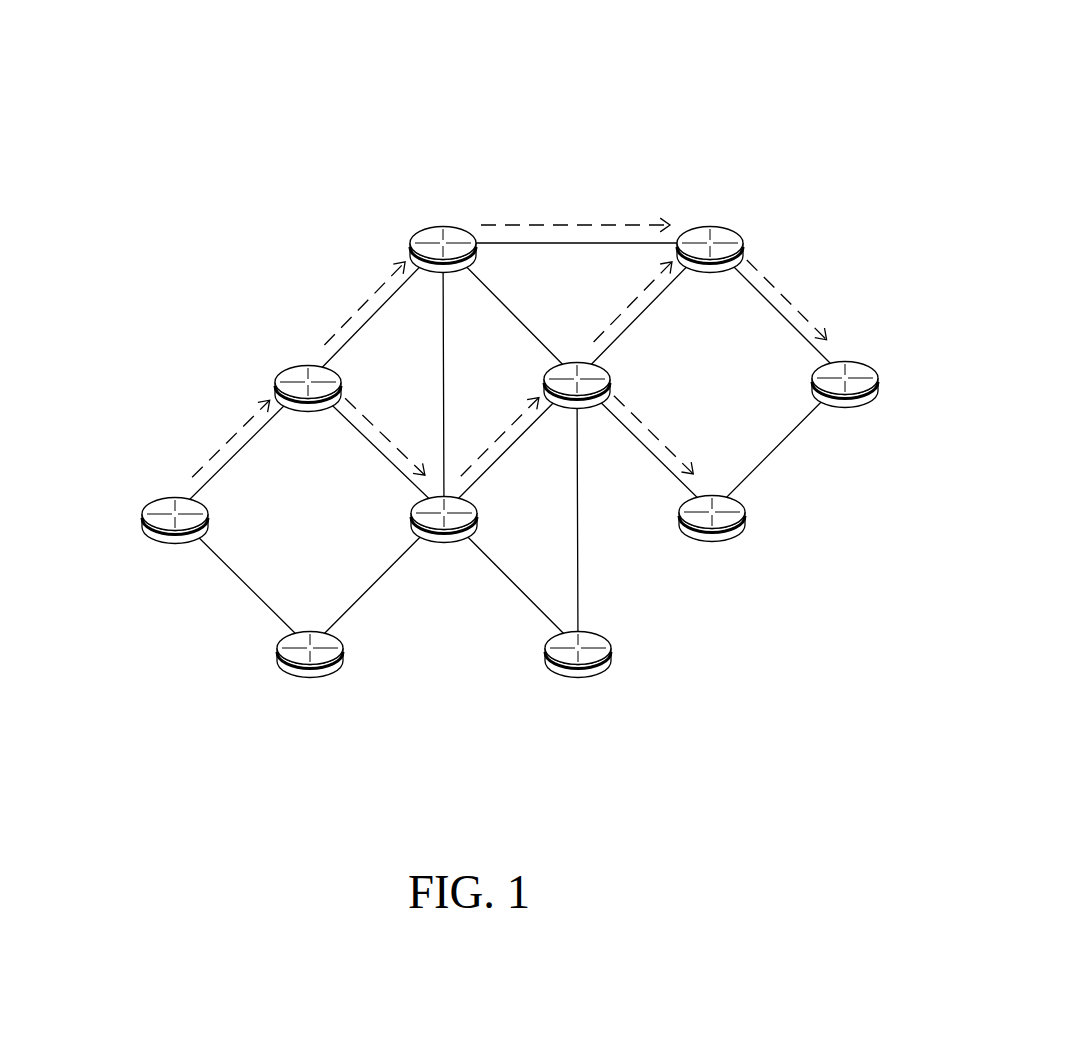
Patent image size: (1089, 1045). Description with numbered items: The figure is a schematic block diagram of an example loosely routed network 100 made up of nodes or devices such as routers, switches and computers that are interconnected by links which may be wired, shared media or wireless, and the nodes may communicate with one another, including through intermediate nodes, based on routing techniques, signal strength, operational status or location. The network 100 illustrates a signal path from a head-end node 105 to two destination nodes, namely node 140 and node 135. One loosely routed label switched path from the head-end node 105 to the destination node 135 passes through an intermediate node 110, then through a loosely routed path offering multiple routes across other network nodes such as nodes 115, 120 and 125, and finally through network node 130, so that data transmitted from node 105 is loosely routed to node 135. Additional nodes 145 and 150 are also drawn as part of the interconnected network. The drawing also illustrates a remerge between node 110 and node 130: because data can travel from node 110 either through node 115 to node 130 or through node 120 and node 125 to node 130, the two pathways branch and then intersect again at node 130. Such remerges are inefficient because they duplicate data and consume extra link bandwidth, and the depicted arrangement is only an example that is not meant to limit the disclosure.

The loosely routed network 100 is at (990, 76).
The head-end node 105 is at (175, 539).
The intermediate node 110 is at (308, 407).
The network node 115 is at (443, 233).
The network node 120 is at (444, 538).
The network node 125 is at (577, 362).
The network node 130 is at (710, 269).
The destination node 135 is at (845, 403).
The destination node 140 is at (712, 537).
The node 145 is at (578, 673).
The node 150 is at (310, 673).